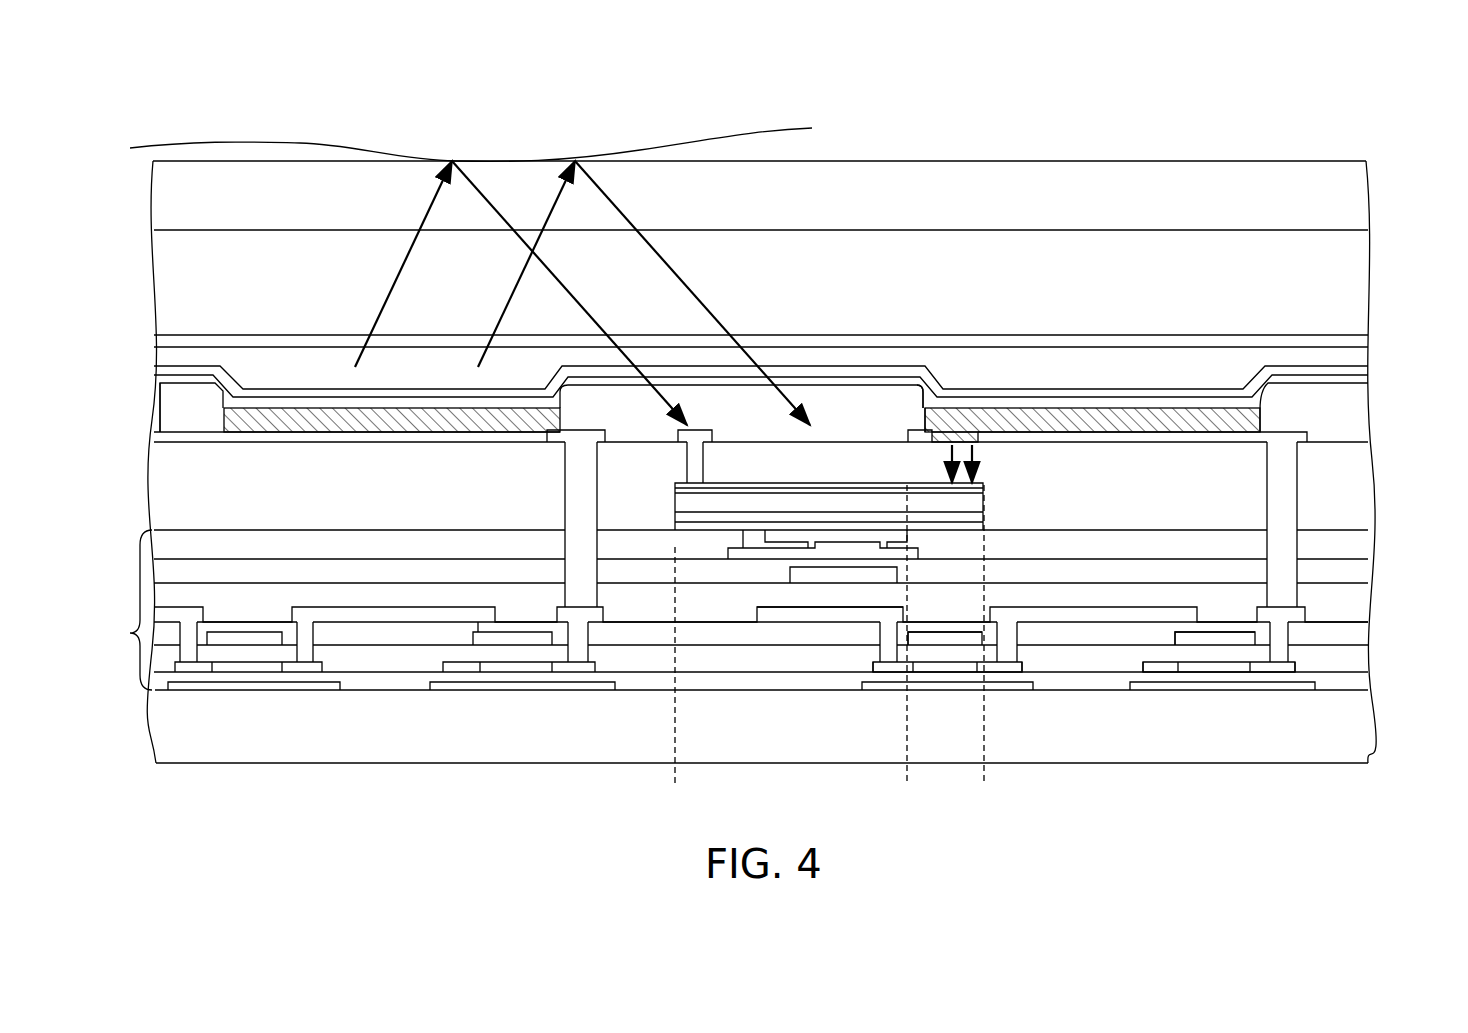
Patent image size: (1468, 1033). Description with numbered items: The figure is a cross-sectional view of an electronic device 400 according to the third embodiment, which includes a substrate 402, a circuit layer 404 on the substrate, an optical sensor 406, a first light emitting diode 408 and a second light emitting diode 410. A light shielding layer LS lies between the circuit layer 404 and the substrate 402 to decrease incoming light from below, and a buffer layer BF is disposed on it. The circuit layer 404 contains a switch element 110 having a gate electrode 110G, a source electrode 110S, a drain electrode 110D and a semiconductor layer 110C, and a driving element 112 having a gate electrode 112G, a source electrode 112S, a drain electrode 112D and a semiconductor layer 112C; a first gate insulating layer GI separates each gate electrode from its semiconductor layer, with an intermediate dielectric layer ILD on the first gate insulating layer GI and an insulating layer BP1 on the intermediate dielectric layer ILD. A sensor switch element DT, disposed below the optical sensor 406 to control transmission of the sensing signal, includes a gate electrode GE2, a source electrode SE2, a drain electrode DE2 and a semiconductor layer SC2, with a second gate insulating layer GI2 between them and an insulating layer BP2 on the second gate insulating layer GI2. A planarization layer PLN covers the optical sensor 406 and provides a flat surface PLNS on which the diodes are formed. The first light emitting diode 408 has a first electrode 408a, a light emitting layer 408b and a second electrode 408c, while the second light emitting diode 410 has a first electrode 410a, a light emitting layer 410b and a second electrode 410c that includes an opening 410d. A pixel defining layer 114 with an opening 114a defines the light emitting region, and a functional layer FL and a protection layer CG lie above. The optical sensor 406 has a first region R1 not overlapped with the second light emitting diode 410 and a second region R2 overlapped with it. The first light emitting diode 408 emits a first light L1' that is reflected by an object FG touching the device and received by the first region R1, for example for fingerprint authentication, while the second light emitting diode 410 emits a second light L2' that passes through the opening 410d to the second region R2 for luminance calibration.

The electronic device 400 is at (1210, 120).
The object FG is at (812, 128).
The first light L1' is at (582, 293).
The protection layer CG is at (946, 207).
The functional layer FL is at (991, 270).
The pixel defining layer 114 is at (843, 405).
The opening 114a is at (920, 397).
The opening 410d is at (963, 440).
The second light emitting diode 410 is at (1193, 382).
The first light emitting diode 408 is at (292, 380).
The first electrode 408a is at (175, 382).
The light emitting layer 408b is at (263, 413).
The second electrode 408c is at (200, 437).
The first electrode 410a is at (1358, 383).
The light emitting layer 410b is at (1262, 412).
The second electrode 410c is at (1277, 442).
The flat surface PLNS is at (1347, 440).
The planarization layer PLN is at (1355, 508).
The insulating layer BP2 is at (1355, 548).
The second gate insulating layer GI2 is at (1355, 576).
The insulating layer BP1 is at (1355, 609).
The intermediate dielectric layer ILD is at (1355, 638).
The first gate insulating layer GI is at (1355, 662).
The buffer layer BF is at (1355, 686).
The switch element 110 is at (258, 612).
The driving element 112 is at (532, 612).
The optical sensor 406 is at (665, 483).
The source electrode SE2 is at (790, 546).
The semiconductor layer SC2 is at (845, 553).
The drain electrode DE2 is at (912, 546).
The gate electrode GE2 is at (798, 575).
The second light L2' is at (998, 464).
The circuit layer 404 is at (117, 610).
The substrate 402 is at (302, 742).
The sensor switch element DT is at (835, 592).
The light shielding layer LS is at (873, 685).
The source electrode 110S is at (883, 673).
The semiconductor layer 110C is at (937, 673).
The gate electrode 110G is at (963, 647).
The drain electrode 110D is at (1007, 673).
The source electrode 112S is at (1150, 673).
The semiconductor layer 112C is at (1208, 673).
The gate electrode 112G is at (1233, 647).
The drain electrode 112D is at (1272, 673).
The first region R1 is at (907, 772).
The second region R2 is at (984, 772).